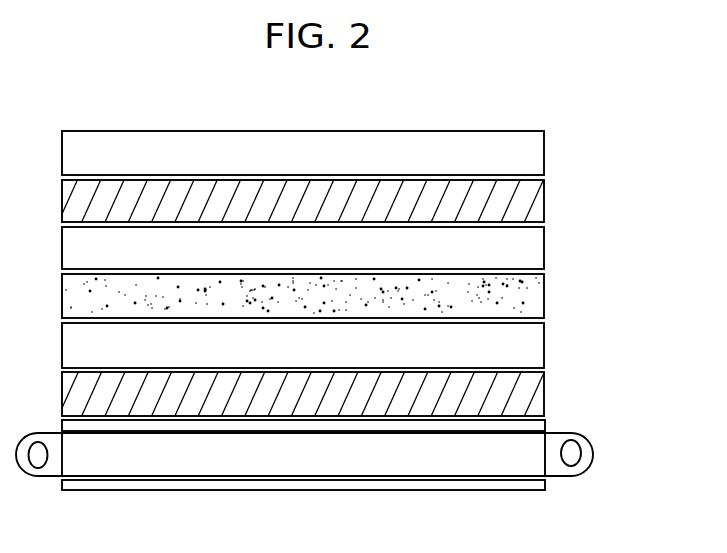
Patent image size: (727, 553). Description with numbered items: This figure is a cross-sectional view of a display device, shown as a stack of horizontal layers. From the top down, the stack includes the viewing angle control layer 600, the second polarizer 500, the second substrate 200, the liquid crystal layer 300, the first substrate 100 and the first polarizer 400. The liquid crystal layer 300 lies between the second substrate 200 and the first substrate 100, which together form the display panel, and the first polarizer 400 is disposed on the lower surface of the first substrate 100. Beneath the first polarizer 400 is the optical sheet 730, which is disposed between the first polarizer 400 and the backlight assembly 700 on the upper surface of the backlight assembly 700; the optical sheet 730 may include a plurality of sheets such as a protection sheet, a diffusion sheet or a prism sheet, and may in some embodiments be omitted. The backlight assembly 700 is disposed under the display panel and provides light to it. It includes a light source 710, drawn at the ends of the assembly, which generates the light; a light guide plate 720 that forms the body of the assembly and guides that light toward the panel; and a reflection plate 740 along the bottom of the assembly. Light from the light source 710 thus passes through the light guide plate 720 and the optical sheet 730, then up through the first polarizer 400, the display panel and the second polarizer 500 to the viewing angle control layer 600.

The viewing angle control layer 600 is at (537, 153).
The second polarizer 500 is at (537, 199).
The second substrate 200 is at (537, 247).
The liquid crystal layer 300 is at (537, 293).
The first substrate 100 is at (537, 343).
The first polarizer 400 is at (537, 396).
The optical sheet 730 is at (537, 426).
The backlight assembly 700 is at (334, 485).
The light source 710 is at (571, 466).
The light guide plate 720 is at (488, 467).
The reflection plate 740 is at (407, 490).